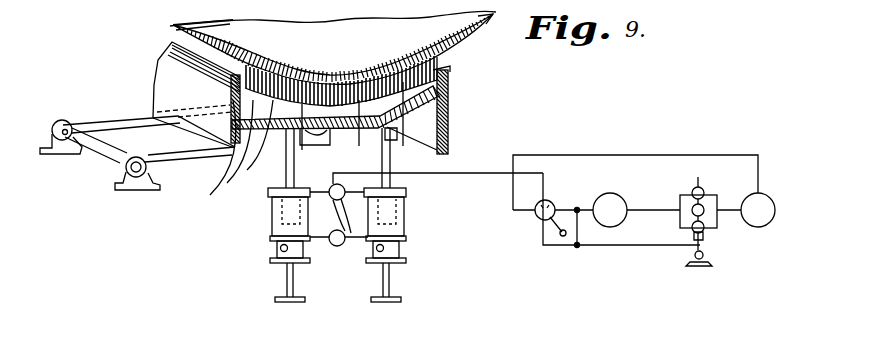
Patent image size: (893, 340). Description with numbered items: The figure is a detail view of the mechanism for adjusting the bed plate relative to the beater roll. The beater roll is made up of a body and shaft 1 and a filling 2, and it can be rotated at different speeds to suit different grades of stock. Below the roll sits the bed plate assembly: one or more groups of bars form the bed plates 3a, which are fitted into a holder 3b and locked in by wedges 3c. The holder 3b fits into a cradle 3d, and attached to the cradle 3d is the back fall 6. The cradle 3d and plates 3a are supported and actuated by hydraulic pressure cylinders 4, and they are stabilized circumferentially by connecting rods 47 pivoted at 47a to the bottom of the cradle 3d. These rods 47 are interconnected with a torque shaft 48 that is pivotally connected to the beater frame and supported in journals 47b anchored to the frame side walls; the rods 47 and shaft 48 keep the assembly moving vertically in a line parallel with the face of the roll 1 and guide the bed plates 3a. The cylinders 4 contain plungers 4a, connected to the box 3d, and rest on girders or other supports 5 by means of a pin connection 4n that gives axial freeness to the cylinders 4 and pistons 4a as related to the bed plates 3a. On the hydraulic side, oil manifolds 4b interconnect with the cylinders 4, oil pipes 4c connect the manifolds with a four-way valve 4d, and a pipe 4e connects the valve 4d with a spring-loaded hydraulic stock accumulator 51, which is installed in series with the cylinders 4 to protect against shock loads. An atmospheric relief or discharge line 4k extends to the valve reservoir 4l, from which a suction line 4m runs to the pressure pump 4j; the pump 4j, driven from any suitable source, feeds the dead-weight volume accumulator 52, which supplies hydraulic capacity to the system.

The beater roll body and shaft 1 is at (333, 58).
The filling 2 is at (170, 27).
The bed plates 3a is at (331, 131).
The holder 3b is at (239, 149).
The wedges 3c is at (215, 157).
The cradle 3d is at (232, 104).
The hydraulic pressure cylinders 4 is at (270, 200).
The plungers 4a is at (272, 222).
The oil manifolds 4b is at (340, 246).
The oil pipes 4c is at (334, 228).
The four-way valve 4d is at (540, 219).
The pipe 4e is at (569, 208).
The pressure pump 4j is at (703, 193).
The atmospheric relief or discharge line 4k is at (620, 246).
The valve reservoir 4l is at (710, 257).
The suction line 4m is at (705, 240).
The pin connection 4n is at (272, 247).
The girders 5 is at (286, 283).
The back fall 6 is at (485, 37).
The connecting rods 47 is at (128, 120).
The pivot 47a is at (333, 184).
The journals 47b is at (138, 190).
The torque shaft 48 is at (97, 155).
The hydraulic stock accumulator 51 is at (613, 198).
The accumulator 52 is at (768, 198).